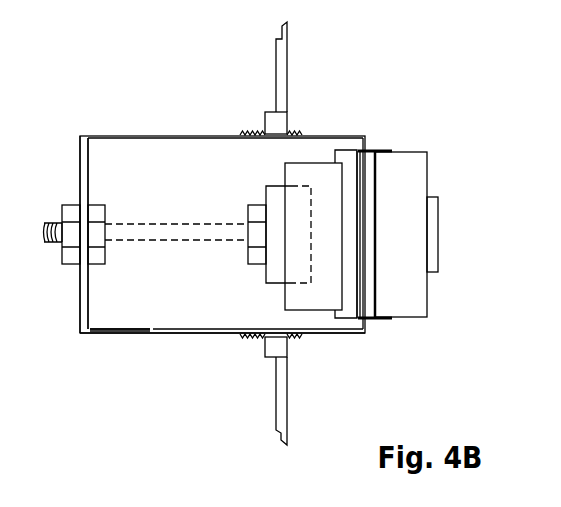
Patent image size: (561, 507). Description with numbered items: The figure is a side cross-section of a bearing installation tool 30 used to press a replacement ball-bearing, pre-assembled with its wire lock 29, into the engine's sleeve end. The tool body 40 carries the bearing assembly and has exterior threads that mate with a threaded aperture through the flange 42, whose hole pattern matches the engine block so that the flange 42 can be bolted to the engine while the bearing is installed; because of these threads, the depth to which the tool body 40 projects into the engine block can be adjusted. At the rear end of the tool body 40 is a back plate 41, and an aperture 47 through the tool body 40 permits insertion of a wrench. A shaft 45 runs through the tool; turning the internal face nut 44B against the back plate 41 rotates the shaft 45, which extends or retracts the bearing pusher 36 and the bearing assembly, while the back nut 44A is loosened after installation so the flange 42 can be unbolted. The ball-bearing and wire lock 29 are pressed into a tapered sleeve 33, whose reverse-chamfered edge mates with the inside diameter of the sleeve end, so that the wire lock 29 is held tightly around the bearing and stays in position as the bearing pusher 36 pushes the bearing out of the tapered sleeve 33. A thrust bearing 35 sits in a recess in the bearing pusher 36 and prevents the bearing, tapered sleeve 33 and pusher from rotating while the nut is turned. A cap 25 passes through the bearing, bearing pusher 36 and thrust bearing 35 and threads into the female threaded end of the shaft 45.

The bearing installation tool 30 is at (137, 108).
The back plate 41 is at (79, 153).
The tool body 40 is at (208, 333).
The aperture 47 is at (122, 332).
The flange 42 is at (289, 368).
The back nut 44A is at (63, 260).
The internal face nut 44B is at (97, 265).
The shaft 45 is at (165, 227).
The thrust bearing 35 is at (280, 186).
The bearing pusher 36 is at (300, 163).
The tapered sleeve 33 is at (383, 149).
The wire lock 29 is at (376, 250).
The cap 25 is at (439, 240).